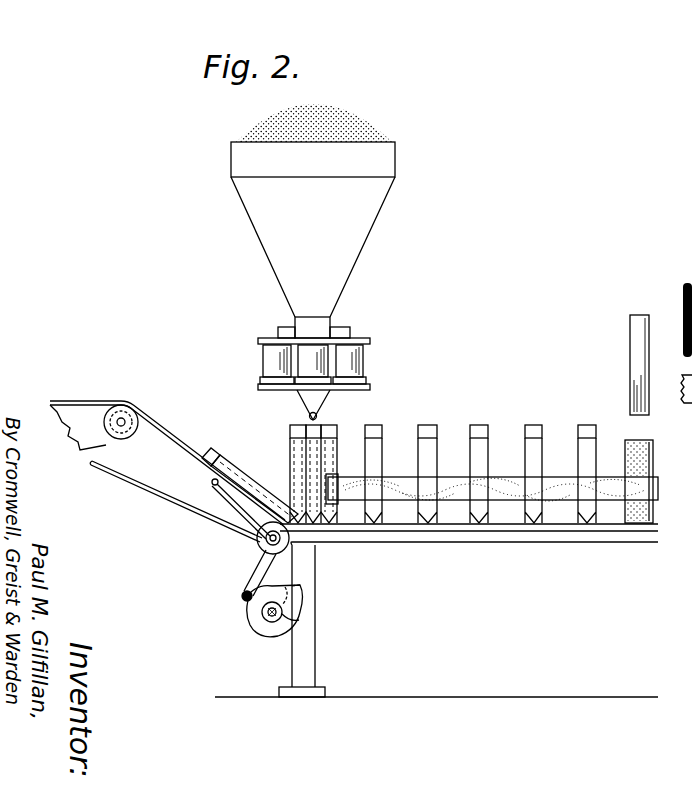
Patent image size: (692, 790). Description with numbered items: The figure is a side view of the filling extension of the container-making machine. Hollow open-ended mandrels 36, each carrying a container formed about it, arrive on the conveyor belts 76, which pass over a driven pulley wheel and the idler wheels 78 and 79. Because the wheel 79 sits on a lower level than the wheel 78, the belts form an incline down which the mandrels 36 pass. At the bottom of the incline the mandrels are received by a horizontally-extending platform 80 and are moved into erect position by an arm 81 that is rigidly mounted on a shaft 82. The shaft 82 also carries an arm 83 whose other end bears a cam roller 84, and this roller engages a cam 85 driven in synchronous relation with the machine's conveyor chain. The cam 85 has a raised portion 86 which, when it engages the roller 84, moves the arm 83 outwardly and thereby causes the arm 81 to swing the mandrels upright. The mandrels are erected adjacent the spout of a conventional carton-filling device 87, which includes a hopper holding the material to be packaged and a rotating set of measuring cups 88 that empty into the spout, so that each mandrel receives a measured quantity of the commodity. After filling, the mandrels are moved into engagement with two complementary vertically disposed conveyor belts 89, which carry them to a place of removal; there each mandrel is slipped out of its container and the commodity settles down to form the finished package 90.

The hollow open-ended mandrel 36 is at (642, 357).
The conveyor belt 76 is at (96, 401).
The idler wheel 78 is at (131, 440).
The idler wheel 79 is at (283, 547).
The horizontally-extending platform 80 is at (318, 526).
The arm 81 is at (217, 492).
The shaft 82 is at (262, 540).
The arm 83 is at (250, 573).
The cam roller 84 is at (241, 595).
The cam 85 is at (257, 617).
The raised portion 86 is at (301, 590).
The carton-filling device 87 is at (367, 208).
The measuring cups 88 is at (312, 360).
The conveyor belt 89 is at (507, 490).
The package 90 is at (655, 465).